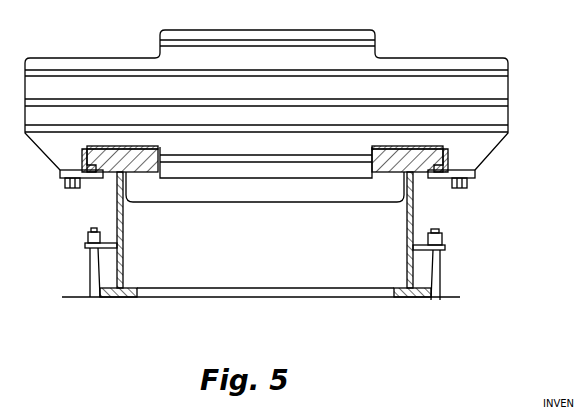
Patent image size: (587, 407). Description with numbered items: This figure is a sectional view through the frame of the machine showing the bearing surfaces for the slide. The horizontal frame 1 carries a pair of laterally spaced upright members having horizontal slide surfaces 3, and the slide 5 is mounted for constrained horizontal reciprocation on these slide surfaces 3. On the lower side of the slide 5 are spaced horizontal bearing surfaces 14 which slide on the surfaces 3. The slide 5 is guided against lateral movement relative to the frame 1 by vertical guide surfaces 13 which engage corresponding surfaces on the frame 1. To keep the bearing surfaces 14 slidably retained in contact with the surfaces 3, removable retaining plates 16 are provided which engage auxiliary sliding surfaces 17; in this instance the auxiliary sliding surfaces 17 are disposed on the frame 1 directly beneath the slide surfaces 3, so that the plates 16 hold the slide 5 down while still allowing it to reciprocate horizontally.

The horizontal frame 1 is at (261, 236).
The horizontal slide surfaces 3 is at (116, 170).
The slide 5 is at (273, 39).
The vertical guide surfaces 13 is at (82, 164).
The horizontal bearing surfaces 14 is at (116, 170).
The removable retaining plates 16 is at (63, 181).
The auxiliary sliding surfaces 17 is at (60, 168).